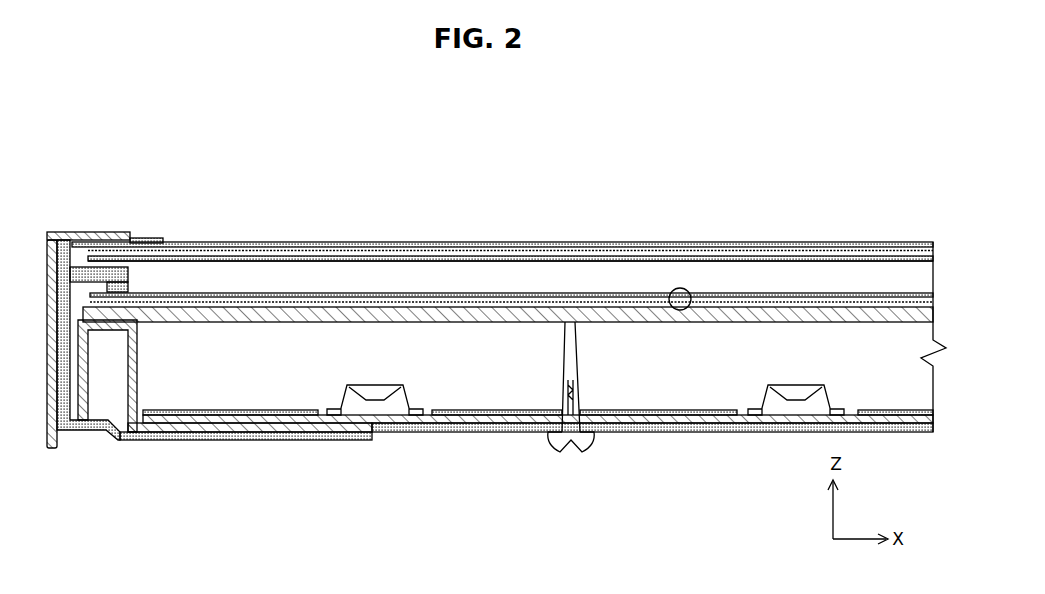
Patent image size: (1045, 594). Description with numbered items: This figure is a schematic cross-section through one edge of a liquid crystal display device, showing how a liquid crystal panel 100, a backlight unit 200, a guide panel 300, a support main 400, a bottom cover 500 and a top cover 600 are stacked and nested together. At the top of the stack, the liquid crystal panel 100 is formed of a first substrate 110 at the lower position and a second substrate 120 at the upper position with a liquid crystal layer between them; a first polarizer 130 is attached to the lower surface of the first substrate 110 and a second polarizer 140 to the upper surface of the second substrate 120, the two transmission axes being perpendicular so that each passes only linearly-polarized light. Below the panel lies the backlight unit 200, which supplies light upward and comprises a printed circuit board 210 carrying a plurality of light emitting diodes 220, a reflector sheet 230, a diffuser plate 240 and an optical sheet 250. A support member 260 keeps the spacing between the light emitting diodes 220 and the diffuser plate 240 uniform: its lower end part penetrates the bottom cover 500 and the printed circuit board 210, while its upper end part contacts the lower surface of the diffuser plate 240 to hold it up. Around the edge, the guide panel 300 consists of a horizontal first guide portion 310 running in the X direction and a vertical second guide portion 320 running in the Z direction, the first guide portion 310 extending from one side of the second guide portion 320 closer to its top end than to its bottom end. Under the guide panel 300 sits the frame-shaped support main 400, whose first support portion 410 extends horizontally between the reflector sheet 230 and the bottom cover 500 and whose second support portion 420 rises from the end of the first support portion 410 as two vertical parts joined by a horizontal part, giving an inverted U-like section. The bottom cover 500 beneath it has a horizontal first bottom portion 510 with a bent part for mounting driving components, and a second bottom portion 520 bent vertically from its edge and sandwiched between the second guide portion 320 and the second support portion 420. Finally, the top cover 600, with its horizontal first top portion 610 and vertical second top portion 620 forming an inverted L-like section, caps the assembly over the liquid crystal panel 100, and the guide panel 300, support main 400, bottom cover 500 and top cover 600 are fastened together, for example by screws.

The liquid crystal panel 100 is at (566, 165).
The first substrate 110 is at (512, 256).
The second substrate 120 is at (466, 249).
The first polarizer 130 is at (556, 261).
The second polarizer 140 is at (420, 241).
The backlight unit 200 is at (413, 517).
The printed circuit board 210 is at (447, 422).
The light emitting diodes 220 is at (393, 402).
The reflector sheet 230 is at (487, 428).
The diffuser plate 240 is at (628, 323).
The optical sheet 250 is at (680, 311).
The support member 260 is at (573, 452).
The guide panel 300 is at (146, 190).
The first guide portion 310 is at (162, 240).
The second guide portion 320 is at (84, 266).
The support main 400 is at (253, 536).
The first support portion 410 is at (253, 436).
The second support portion 420 is at (137, 372).
The bottom cover 500 is at (83, 528).
The first bottom portion 510 is at (140, 432).
The second bottom portion 520 is at (67, 436).
The top cover 600 is at (82, 166).
The first top portion 610 is at (62, 241).
The second top portion 620 is at (46, 243).